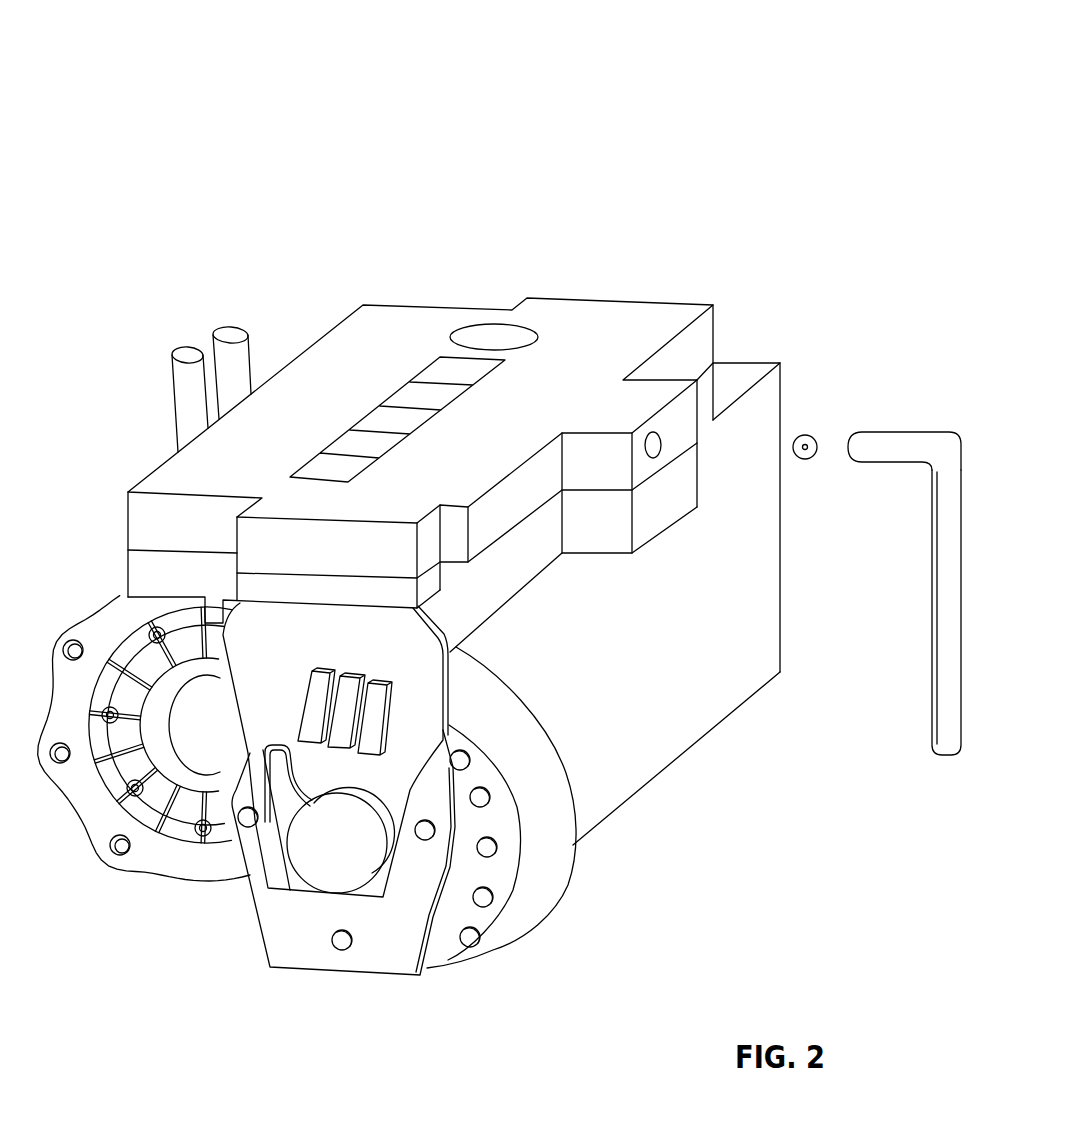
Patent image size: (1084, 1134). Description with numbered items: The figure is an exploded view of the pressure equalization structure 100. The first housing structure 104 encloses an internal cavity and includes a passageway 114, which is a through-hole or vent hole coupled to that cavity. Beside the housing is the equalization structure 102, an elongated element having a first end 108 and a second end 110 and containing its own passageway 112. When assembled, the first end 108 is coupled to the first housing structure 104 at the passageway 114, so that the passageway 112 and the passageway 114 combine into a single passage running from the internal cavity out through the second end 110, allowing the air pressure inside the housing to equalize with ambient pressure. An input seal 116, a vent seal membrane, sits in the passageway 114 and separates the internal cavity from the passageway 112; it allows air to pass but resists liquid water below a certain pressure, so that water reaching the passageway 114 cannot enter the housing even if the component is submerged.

The pressure equalization structure 100 is at (171, 39).
The equalization structure 102 is at (904, 430).
The first housing structure 104 is at (408, 398).
The first end 108 is at (862, 450).
The second end 110 is at (943, 748).
The passageway 112 is at (947, 772).
The passageway 114 is at (655, 447).
The input seal 116 is at (805, 435).